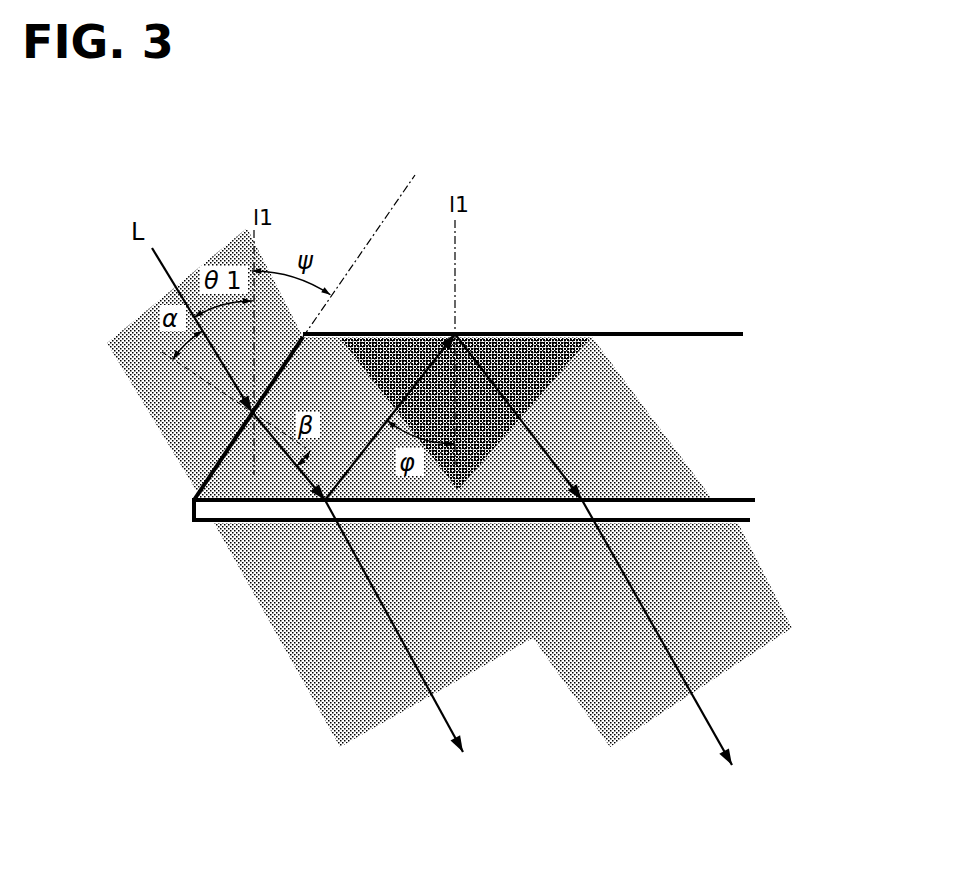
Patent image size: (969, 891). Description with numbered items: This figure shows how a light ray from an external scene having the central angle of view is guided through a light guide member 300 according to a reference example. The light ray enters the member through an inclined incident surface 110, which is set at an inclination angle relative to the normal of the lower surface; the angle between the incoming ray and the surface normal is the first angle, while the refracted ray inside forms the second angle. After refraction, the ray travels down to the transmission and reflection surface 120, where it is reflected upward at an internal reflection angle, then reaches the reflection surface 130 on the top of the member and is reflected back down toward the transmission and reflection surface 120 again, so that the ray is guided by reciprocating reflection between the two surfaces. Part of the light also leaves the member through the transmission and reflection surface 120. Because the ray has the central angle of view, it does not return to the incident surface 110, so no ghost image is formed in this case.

The incident surface 110 is at (223, 458).
The transmission and reflection surface 120 is at (292, 518).
The reflection surface 130 is at (645, 334).
The light guide member 300 is at (738, 306).